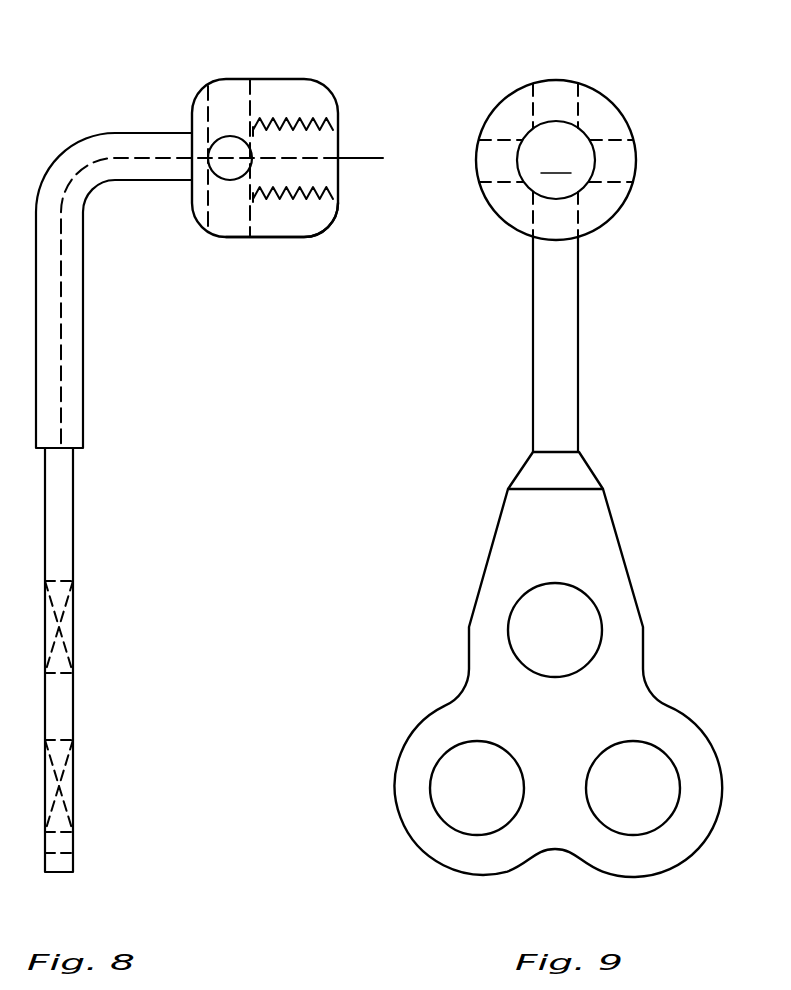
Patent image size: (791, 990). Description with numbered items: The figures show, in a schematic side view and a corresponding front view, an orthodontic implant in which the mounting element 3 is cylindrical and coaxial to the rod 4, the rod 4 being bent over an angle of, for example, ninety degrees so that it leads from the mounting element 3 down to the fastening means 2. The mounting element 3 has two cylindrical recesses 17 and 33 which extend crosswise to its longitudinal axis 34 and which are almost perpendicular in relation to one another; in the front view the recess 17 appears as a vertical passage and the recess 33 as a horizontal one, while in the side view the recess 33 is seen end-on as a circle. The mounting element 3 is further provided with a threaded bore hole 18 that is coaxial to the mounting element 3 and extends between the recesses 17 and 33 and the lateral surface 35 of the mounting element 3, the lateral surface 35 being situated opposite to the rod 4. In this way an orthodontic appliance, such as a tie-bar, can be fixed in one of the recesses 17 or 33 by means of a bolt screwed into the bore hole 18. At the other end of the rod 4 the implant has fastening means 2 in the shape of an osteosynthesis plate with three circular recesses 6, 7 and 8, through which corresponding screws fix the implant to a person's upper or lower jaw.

In FIG. 8, the fastening means 2 is at (55, 536).
In FIG. 9, the fastening means 2 is at (634, 512).
In FIG. 8, the mounting element 3 is at (299, 65).
In FIG. 9, the mounting element 3 is at (652, 110).
In FIG. 8, the rod 4 is at (70, 167).
In FIG. 9, the rod 4 is at (560, 347).
In FIG. 8, the circular recess 6 is at (70, 627).
In FIG. 9, the circular recess 6 is at (570, 602).
In FIG. 8, the circular recess 7 is at (122, 786).
In FIG. 9, the circular recess 7 is at (465, 788).
In FIG. 8, the circular recess 8 is at (68, 783).
In FIG. 9, the circular recess 8 is at (642, 770).
In FIG. 8, the cylindrical recess 17 is at (222, 112).
In FIG. 9, the cylindrical recess 17 is at (560, 113).
In FIG. 8, the threaded bore hole 18 is at (313, 145).
In FIG. 9, the threaded bore hole 18 is at (556, 160).
In FIG. 8, the cylindrical recess 33 is at (222, 175).
In FIG. 9, the cylindrical recess 33 is at (613, 160).
In FIG. 8, the longitudinal axis 34 is at (358, 163).
In FIG. 8, the lateral surface 35 is at (328, 227).